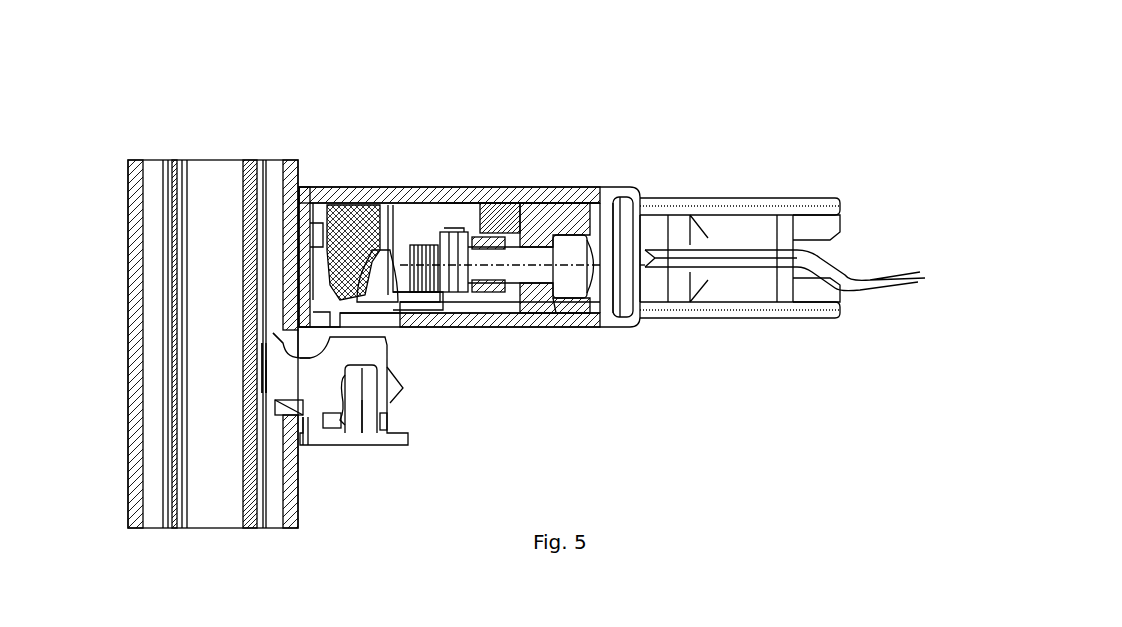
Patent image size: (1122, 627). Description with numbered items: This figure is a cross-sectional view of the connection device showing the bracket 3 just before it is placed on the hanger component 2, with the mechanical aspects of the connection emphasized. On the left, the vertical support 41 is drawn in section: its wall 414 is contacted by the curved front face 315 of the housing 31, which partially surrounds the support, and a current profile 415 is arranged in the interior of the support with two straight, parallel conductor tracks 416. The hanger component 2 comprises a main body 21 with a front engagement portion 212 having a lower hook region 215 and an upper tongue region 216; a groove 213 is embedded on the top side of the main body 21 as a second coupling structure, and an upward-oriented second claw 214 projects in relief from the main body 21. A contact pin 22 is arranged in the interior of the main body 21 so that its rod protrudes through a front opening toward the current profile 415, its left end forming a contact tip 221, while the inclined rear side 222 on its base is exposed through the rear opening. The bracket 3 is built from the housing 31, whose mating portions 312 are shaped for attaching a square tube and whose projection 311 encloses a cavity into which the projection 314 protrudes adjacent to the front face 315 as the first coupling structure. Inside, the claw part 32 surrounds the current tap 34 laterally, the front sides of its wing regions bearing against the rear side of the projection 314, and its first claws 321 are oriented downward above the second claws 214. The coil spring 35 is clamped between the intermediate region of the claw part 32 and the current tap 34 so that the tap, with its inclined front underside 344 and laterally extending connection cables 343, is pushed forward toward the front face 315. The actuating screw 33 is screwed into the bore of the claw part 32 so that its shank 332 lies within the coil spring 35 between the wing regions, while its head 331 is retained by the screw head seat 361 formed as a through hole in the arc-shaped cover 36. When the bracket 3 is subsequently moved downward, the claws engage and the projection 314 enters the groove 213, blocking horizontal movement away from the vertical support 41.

The hanger component 2 is at (292, 410).
The main body 21 is at (412, 443).
The engagement portion 212 is at (253, 358).
The groove 213 is at (310, 358).
The second claw 214 is at (370, 408).
The hook region 215 is at (275, 398).
The tongue region 216 is at (273, 333).
The contact tip 221 is at (257, 378).
The contact pin 22 is at (412, 392).
The inclined rear side 222 is at (398, 372).
The bracket 3 is at (860, 195).
The housing 31 is at (433, 176).
The projection 311 is at (388, 260).
The mating portion 312 is at (672, 212).
The projection 314 is at (313, 233).
The front face 315 is at (298, 211).
The claw part 32 is at (365, 192).
The first claw 321 is at (343, 267).
The actuating screw 33 is at (556, 228).
The head 331 is at (580, 247).
The shank 332 is at (507, 267).
The current tap 34 is at (453, 190).
The connection cable 343 is at (728, 258).
The inclined front underside 344 is at (410, 187).
The coil spring 35 is at (463, 247).
The cover 36 is at (603, 347).
The screw head seat 361 is at (556, 300).
The vertical support 41 is at (128, 148).
The wall 414 is at (128, 183).
The current profile 415 is at (195, 148).
The conductor track 416 is at (257, 180).